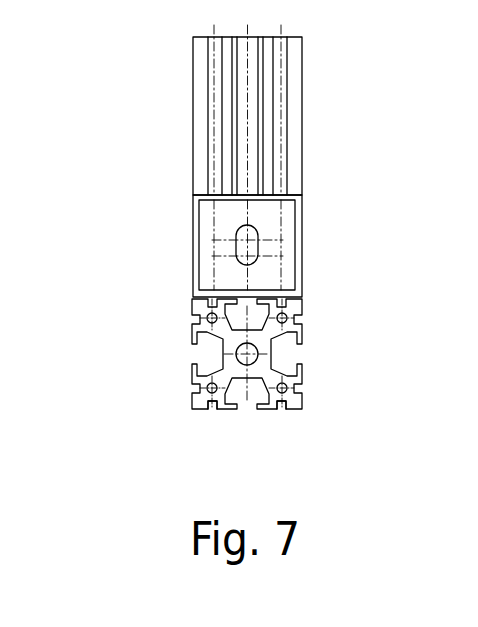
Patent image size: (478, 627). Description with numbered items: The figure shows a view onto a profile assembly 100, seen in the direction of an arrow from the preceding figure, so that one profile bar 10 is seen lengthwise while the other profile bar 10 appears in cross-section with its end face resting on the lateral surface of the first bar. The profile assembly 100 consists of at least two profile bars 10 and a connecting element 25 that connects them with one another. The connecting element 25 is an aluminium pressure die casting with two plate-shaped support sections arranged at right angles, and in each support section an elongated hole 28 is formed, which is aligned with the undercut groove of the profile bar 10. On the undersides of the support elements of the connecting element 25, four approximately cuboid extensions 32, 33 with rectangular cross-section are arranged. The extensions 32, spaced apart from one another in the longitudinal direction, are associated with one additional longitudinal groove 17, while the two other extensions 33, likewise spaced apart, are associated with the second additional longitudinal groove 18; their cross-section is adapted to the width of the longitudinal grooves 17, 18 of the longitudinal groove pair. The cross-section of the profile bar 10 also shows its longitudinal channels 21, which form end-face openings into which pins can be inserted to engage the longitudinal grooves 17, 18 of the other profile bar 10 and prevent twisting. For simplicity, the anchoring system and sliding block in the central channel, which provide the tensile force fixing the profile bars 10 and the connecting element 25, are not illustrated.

The profile assembly 100 is at (152, 147).
The profile bar 10 is at (304, 109).
The connecting element 25 is at (284, 267).
The elongated hole 28 is at (235, 253).
The extension 32 is at (207, 318).
The extension 33 is at (287, 318).
The longitudinal channel 21 is at (287, 386).
The additional longitudinal groove 17 is at (212, 408).
The additional longitudinal groove 18 is at (282, 408).